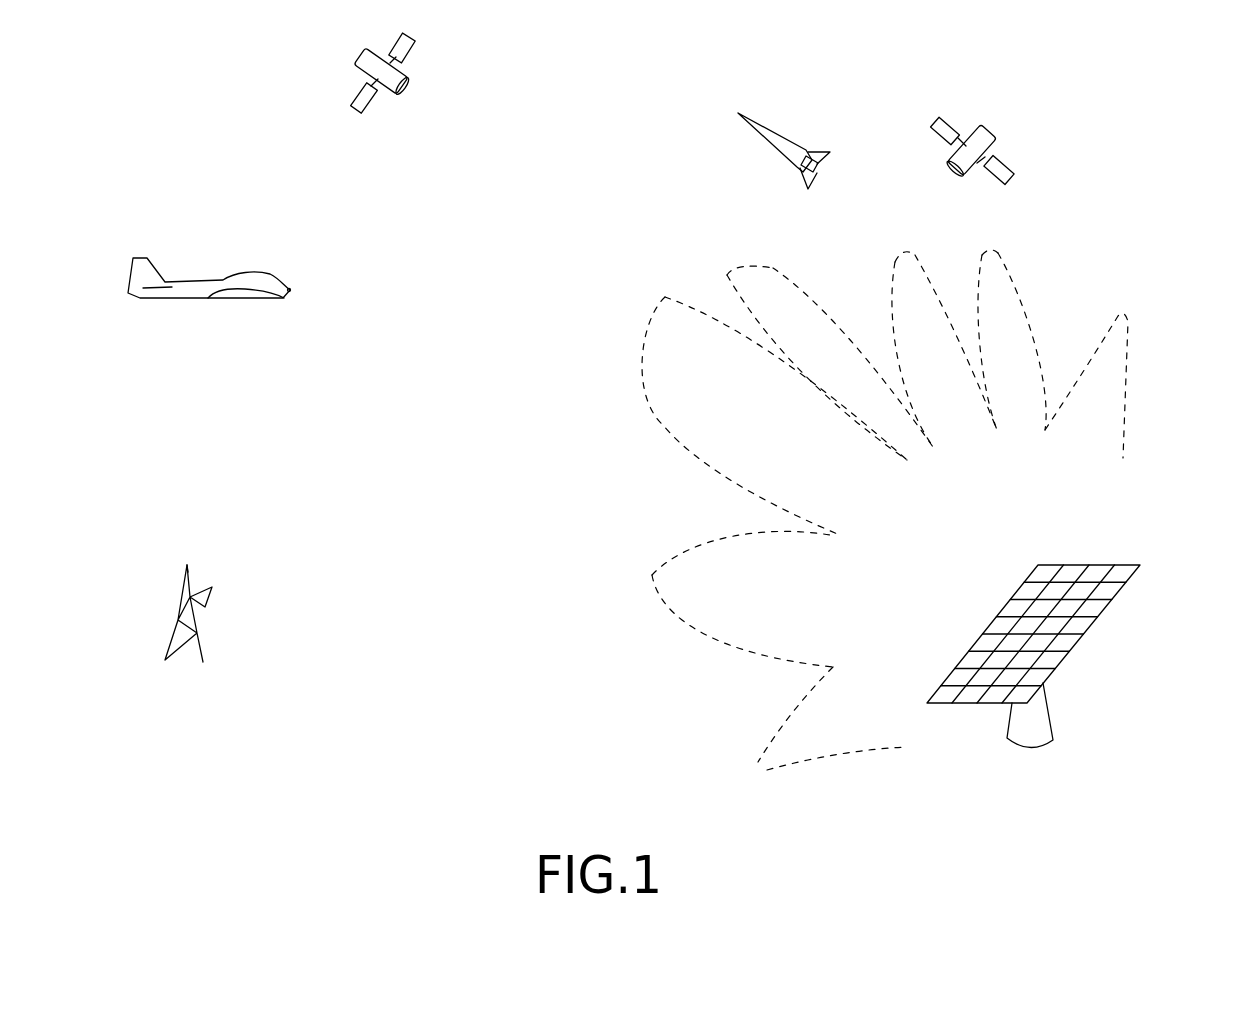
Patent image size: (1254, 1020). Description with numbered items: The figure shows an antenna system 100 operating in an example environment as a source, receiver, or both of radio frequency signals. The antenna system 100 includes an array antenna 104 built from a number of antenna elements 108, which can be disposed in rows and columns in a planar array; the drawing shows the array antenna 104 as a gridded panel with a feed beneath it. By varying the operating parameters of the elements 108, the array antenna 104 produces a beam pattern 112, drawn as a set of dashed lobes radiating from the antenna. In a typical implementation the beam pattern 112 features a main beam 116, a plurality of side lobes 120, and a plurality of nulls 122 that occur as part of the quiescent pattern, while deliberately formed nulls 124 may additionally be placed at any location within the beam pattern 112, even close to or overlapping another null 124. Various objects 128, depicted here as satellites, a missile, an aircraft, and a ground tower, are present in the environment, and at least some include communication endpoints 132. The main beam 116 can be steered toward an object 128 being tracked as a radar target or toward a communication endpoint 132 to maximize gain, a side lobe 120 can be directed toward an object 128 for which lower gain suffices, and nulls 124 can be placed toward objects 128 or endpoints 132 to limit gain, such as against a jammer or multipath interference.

The antenna system 100 is at (1052, 673).
The array antenna 104 is at (1052, 614).
The antenna elements 108 is at (1080, 592).
The beam pattern 112 is at (650, 430).
The main beam 116 is at (652, 313).
The side lobes 120 is at (1128, 345).
The nulls 122 is at (1045, 430).
The deliberately formed nulls 124 is at (907, 460).
The objects 128 is at (362, 58).
The communication endpoints 132 is at (408, 88).